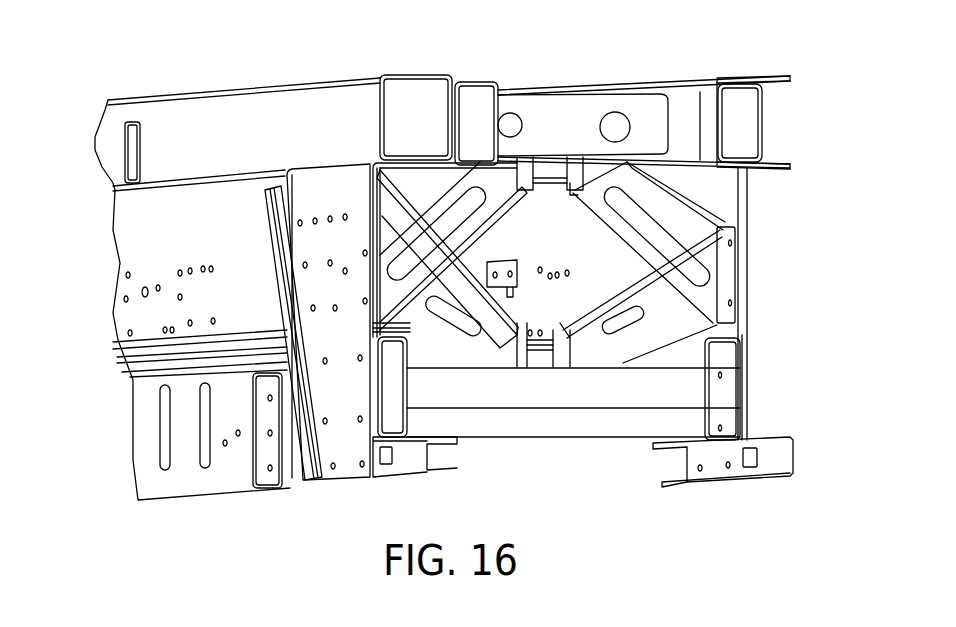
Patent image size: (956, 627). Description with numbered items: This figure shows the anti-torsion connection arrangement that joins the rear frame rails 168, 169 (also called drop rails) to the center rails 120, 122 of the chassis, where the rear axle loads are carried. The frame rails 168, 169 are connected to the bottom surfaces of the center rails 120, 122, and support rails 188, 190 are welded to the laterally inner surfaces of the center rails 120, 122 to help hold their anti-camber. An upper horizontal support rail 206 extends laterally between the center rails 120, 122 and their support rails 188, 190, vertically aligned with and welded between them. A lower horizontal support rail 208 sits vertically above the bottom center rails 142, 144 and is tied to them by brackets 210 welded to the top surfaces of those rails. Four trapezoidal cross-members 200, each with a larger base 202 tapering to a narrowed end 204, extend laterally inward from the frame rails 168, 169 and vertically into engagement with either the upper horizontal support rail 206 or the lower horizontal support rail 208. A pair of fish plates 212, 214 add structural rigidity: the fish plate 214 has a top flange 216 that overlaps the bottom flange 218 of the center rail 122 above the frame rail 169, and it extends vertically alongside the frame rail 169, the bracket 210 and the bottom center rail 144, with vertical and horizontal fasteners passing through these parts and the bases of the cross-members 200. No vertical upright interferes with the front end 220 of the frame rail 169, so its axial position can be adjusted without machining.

The center rail 120 is at (750, 122).
The center rail 122 is at (427, 87).
The bottom center rail 142 is at (783, 458).
The bottom center rail 144 is at (415, 470).
The rear frame rail 168 is at (550, 197).
The rear frame rail 169 is at (148, 197).
The support rail 188 is at (703, 98).
The support rail 190 is at (467, 97).
The trapezoidal cross-member 200 is at (420, 200).
The larger base 202 is at (733, 262).
The narrowed end 204 is at (535, 142).
The upper horizontal support rail 206 is at (640, 113).
The lower horizontal support rail 208 is at (590, 397).
The bracket 210 is at (725, 372).
The fish plate 212 is at (745, 392).
The fish plate 214 is at (330, 438).
The top flange 216 is at (318, 150).
The bottom flange 218 is at (230, 175).
The front end 220 is at (388, 163).